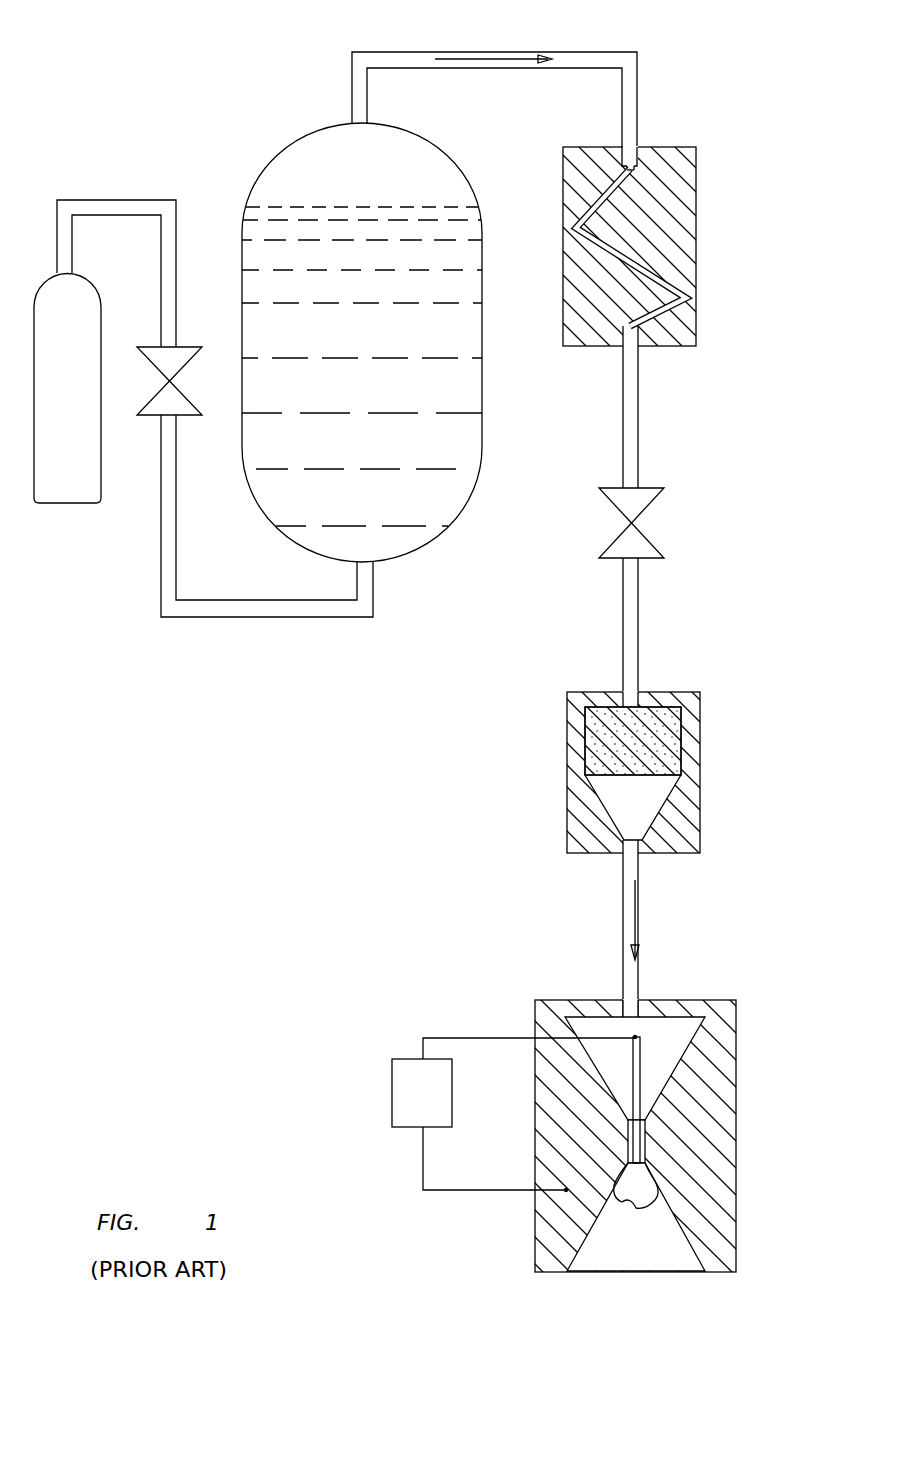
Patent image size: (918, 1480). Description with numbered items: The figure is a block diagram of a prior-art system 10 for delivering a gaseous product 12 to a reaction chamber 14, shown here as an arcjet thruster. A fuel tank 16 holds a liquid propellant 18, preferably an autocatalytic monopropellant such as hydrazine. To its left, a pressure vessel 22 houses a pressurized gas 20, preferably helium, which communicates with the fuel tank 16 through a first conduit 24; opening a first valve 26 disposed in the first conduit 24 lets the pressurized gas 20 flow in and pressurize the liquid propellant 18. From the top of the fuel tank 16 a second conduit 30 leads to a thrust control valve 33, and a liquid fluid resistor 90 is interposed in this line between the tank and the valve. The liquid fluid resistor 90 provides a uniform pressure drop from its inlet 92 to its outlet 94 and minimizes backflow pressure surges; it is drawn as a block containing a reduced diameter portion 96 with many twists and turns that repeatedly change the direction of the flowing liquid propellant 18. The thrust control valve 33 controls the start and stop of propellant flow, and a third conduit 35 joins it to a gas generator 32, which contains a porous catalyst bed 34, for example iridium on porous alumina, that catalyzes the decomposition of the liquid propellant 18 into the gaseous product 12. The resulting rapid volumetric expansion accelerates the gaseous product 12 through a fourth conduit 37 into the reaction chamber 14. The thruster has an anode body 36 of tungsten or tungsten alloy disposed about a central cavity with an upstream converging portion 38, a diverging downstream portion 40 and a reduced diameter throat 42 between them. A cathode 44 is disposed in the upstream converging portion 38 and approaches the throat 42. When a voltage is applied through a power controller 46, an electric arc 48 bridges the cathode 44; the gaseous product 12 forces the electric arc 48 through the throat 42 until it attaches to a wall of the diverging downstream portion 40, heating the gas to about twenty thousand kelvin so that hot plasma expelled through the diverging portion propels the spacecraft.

The system 10 is at (138, 150).
The gaseous product 12 is at (632, 917).
The reaction chamber 14 is at (572, 1140).
The fuel tank 16 is at (462, 373).
The liquid propellant 18 is at (480, 56).
The pressurized gas 20 is at (90, 324).
The pressure vessel 22 is at (67, 505).
The first conduit 24 is at (160, 206).
The first valve 26 is at (153, 417).
The second conduit 30 is at (636, 83).
The gas generator 32 is at (666, 772).
The thrust control valve 33 is at (640, 545).
The porous catalyst bed 34 is at (675, 728).
The third conduit 35 is at (637, 625).
The anode body 36 is at (666, 1144).
The fourth conduit 37 is at (640, 870).
The upstream converging portion 38 is at (683, 1040).
The diverging downstream portion 40 is at (680, 1270).
The throat 42 is at (645, 1150).
The cathode 44 is at (638, 1058).
The power controller 46 is at (398, 1100).
The electric arc 48 is at (637, 1195).
The liquid fluid resistor 90 is at (634, 242).
The inlet 92 is at (632, 160).
The outlet 94 is at (636, 338).
The reduced diameter portion 96 is at (615, 252).